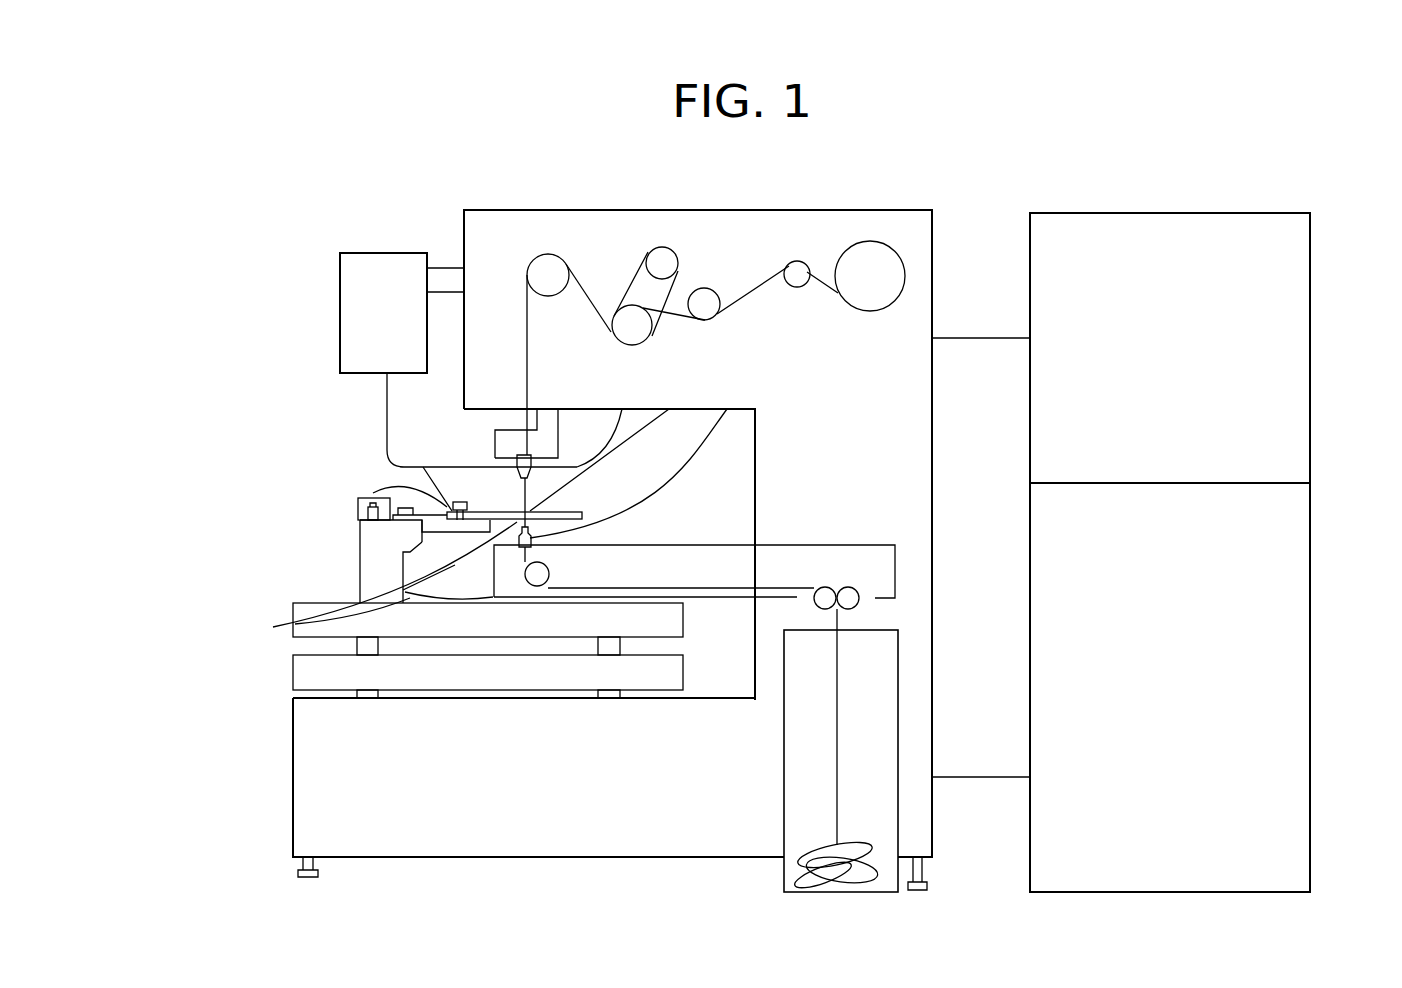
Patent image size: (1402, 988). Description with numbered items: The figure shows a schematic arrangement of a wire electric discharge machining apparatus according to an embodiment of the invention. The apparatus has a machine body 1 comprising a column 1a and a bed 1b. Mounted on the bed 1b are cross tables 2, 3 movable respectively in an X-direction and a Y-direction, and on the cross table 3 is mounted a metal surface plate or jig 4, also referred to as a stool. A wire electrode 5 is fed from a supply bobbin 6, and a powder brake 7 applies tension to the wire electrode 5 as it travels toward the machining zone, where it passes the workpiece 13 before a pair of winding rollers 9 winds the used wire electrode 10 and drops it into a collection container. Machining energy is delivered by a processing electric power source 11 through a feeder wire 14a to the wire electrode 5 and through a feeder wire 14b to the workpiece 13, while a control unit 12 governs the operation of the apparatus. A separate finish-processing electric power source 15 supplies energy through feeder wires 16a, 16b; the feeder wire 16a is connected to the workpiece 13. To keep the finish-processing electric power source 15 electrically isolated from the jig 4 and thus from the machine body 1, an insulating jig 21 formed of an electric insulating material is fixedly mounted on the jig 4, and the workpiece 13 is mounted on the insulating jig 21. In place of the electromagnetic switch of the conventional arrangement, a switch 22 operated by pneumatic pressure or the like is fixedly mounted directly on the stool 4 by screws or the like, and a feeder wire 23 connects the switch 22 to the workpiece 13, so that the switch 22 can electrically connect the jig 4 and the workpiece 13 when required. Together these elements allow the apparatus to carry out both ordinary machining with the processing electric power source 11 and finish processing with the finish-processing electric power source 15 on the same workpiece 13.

The machine body 1 is at (352, 232).
The column 1a is at (463, 232).
The bed 1b is at (300, 738).
The cross table 2 is at (683, 680).
The cross table 3 is at (683, 625).
The jig 4 is at (367, 560).
The wire electrode 5 is at (580, 280).
The supply bobbin 6 is at (865, 240).
The powder brake 7 is at (627, 336).
The winding rollers 9 is at (845, 588).
The used wire electrode 10 is at (803, 837).
The processing electric power source 11 is at (1312, 355).
The control unit 12 is at (1312, 548).
The workpiece 13 is at (577, 510).
The feeder wire 14a is at (613, 413).
The feeder wire 14b is at (369, 581).
The finish-processing electric power source 15 is at (350, 298).
The feeder wire 16a is at (443, 463).
The feeder wire 16b is at (420, 477).
The insulating jig 21 is at (430, 523).
The switch 22 is at (360, 513).
The feeder wire 23 is at (370, 483).